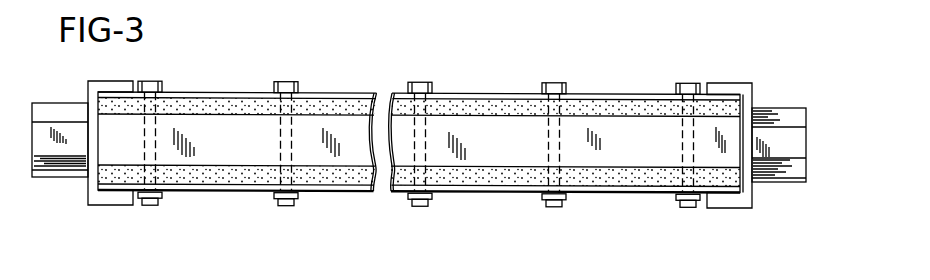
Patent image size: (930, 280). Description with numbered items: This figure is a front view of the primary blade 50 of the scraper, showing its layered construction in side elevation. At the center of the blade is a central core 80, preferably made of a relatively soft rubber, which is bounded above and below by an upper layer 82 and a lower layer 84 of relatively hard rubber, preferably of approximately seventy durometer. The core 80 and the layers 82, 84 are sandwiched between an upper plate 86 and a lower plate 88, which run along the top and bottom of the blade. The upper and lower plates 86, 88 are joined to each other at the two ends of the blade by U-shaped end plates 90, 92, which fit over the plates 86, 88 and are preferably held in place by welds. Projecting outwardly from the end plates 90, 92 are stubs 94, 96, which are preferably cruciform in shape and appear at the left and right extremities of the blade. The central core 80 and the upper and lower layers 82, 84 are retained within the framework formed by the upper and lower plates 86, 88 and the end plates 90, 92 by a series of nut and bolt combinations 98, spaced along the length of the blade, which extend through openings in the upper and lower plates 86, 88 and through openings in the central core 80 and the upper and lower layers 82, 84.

The primary blade 50 is at (716, 63).
The central core 80 is at (603, 158).
The upper layer 82 is at (662, 113).
The lower layer 84 is at (660, 179).
The upper plate 86 is at (361, 92).
The lower plate 88 is at (490, 188).
The end plate 90 is at (90, 185).
The end plate 92 is at (745, 192).
The stub 94 is at (47, 112).
The stub 96 is at (773, 107).
The nut and bolt combinations 98 is at (287, 81).